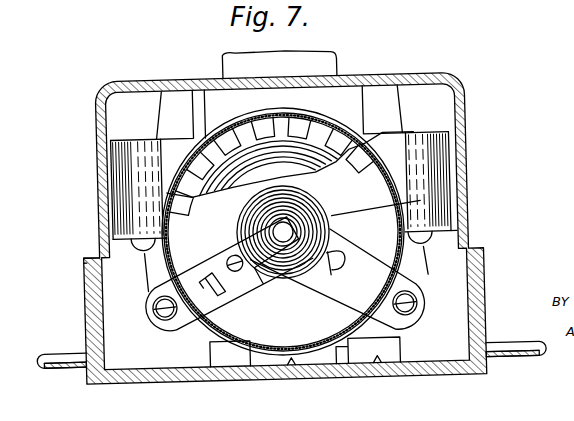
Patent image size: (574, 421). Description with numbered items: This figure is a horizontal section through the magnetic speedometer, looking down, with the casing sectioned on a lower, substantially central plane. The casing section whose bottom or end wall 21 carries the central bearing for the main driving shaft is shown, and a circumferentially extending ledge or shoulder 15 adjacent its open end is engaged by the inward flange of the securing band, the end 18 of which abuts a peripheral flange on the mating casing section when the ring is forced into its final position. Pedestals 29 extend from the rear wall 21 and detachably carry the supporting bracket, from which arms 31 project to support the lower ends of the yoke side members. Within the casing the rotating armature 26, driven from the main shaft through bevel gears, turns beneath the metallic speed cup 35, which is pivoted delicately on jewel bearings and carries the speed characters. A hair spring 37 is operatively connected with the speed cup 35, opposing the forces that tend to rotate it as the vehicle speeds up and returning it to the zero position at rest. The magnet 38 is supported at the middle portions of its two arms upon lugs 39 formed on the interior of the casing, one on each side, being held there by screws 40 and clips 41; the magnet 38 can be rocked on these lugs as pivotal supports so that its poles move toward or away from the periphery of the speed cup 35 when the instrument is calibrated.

The ledge or shoulder 15 is at (90, 258).
The end of the securing member 18 is at (88, 368).
The bottom or end wall 21 is at (336, 72).
The rotating armature 26 is at (230, 130).
The pedestals 29 is at (172, 102).
The arms 31 is at (155, 278).
The speed cup 35 is at (355, 168).
The hair spring 37 is at (420, 200).
The magnet 38 is at (135, 170).
The lugs 39 is at (118, 112).
The screws 40 is at (107, 243).
The clips 41 is at (110, 215).